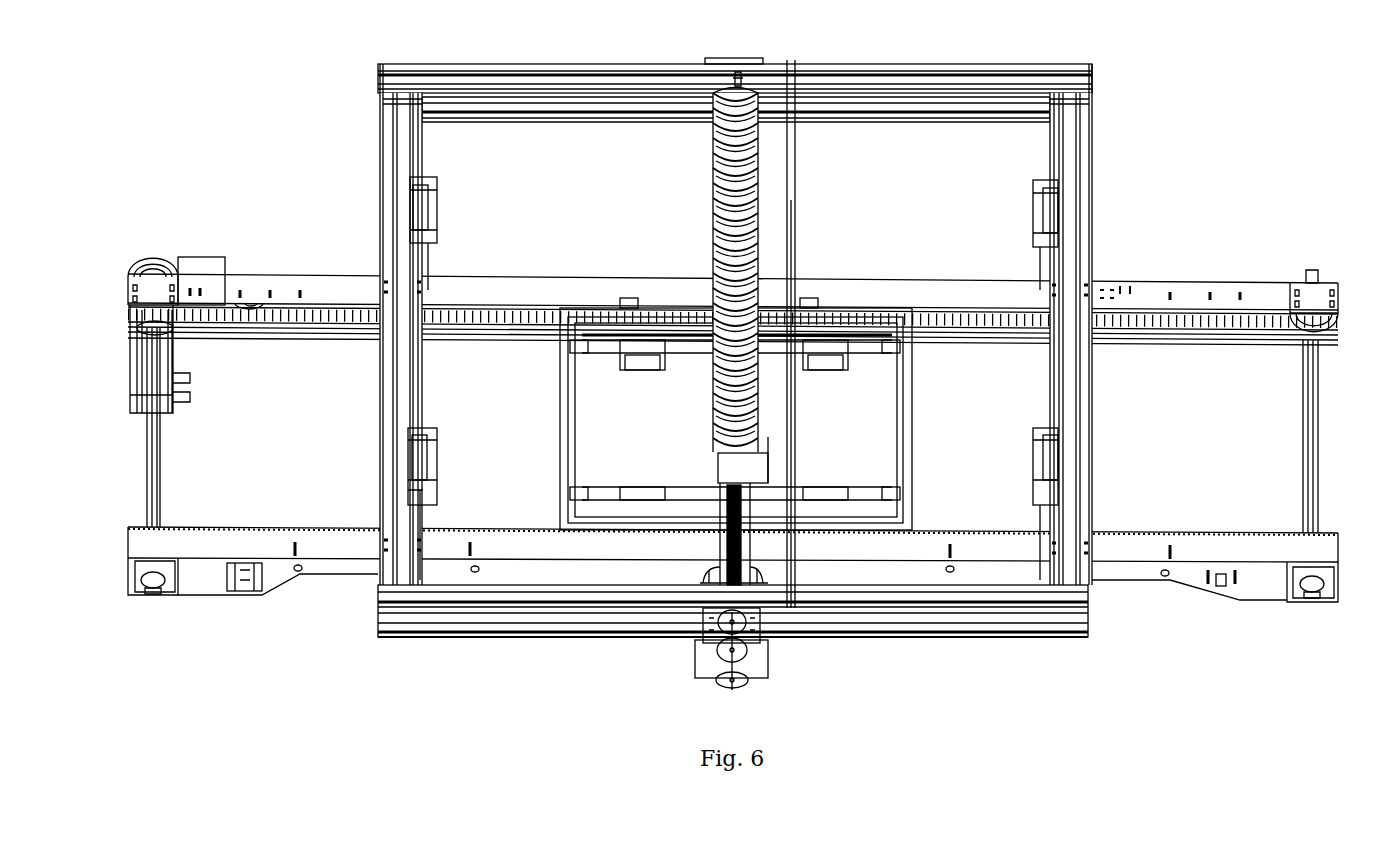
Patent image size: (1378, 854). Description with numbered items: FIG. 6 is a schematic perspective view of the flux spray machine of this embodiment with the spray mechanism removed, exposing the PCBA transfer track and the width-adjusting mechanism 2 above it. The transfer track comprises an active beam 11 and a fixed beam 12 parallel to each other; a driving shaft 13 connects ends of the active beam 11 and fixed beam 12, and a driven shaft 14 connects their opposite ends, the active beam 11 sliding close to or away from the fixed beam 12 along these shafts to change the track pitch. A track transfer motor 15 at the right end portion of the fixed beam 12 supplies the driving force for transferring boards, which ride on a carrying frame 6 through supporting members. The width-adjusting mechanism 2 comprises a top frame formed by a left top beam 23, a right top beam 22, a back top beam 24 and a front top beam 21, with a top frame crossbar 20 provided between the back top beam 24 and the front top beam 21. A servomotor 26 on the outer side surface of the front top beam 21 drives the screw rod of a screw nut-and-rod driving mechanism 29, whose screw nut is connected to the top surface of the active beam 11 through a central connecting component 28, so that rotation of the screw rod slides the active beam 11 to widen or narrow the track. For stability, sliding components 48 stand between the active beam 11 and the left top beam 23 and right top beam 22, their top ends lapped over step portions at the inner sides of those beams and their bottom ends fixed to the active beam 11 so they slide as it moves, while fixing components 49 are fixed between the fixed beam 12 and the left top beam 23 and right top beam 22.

The width-adjusting mechanism 2 is at (673, 662).
The carrying frame 6 is at (905, 420).
The active beam 11 is at (1188, 548).
The fixed beam 12 is at (1170, 290).
The driving shaft 13 is at (160, 456).
The driven shaft 14 is at (1318, 440).
The track transfer motor 15 is at (130, 357).
The top frame crossbar 20 is at (797, 168).
The front top beam 21 is at (963, 640).
The right top beam 22 is at (378, 157).
The left top beam 23 is at (1085, 156).
The back top beam 24 is at (935, 66).
The servomotor 26 is at (770, 665).
The central connecting component 28 is at (722, 490).
The screw nut-and-rod driving mechanism 29 is at (714, 170).
The sliding component 48 is at (437, 462).
The fixing component 49 is at (437, 240).